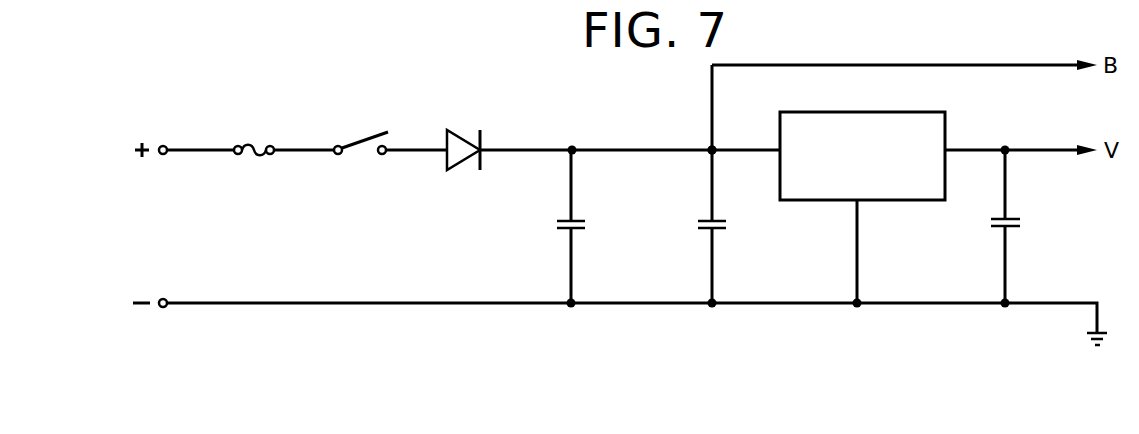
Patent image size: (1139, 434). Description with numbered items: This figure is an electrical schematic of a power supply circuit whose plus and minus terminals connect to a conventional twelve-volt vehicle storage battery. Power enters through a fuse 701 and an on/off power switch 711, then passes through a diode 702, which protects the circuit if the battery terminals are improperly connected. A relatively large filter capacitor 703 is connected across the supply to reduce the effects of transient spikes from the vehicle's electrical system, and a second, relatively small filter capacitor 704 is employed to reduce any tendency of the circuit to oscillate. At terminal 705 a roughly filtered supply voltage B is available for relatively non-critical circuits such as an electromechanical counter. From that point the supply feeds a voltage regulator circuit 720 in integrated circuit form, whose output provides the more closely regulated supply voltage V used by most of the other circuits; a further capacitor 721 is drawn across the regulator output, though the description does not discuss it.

The fuse 701 is at (255, 140).
The on/off power switch 711 is at (358, 142).
The diode 702 is at (465, 142).
The terminal 705 is at (700, 142).
The filter capacitor 703 is at (568, 220).
The second filter capacitor 704 is at (708, 218).
The voltage regulator circuit 720 is at (923, 110).
The capacitor 721 is at (1008, 219).